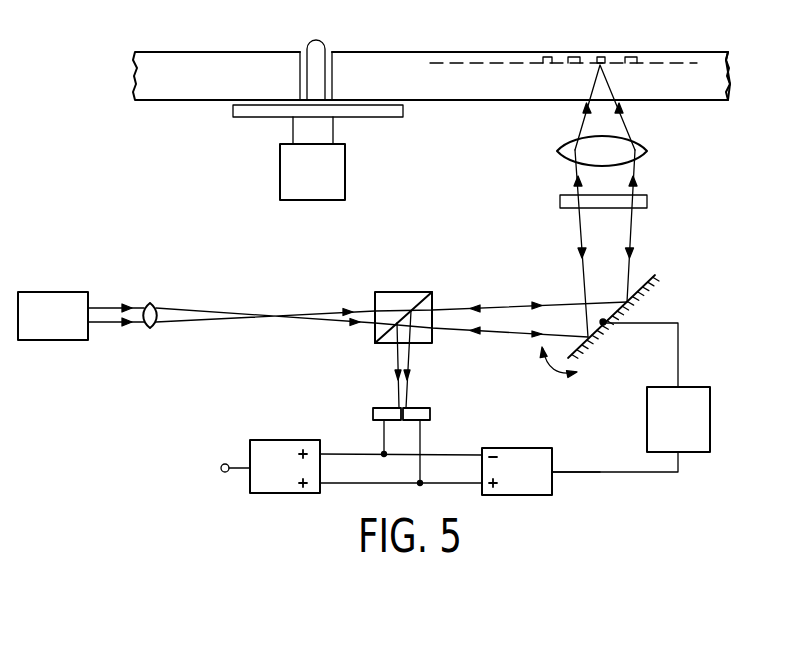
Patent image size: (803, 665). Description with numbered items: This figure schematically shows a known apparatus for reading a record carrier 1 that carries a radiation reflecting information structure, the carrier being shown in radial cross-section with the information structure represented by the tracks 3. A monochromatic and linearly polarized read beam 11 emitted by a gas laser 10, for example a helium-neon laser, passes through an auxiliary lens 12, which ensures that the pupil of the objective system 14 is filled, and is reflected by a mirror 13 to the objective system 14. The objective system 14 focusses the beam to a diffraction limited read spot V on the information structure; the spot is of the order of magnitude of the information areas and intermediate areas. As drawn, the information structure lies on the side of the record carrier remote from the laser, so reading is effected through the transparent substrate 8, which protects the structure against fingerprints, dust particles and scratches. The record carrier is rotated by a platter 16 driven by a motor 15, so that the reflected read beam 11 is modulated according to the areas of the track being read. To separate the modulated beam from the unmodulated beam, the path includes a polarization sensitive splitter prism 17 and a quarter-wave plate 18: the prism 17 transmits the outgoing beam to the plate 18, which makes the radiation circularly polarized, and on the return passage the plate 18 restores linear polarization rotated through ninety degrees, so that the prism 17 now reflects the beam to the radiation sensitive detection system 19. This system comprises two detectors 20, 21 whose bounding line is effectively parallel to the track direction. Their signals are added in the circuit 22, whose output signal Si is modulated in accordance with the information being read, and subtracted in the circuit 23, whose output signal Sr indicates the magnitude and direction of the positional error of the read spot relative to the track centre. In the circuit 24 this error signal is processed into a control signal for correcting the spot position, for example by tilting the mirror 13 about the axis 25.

The record carrier 1 is at (424, 48).
The tracks 3 is at (633, 53).
The transparent substrate 8 is at (710, 90).
The gas laser 10 is at (67, 302).
The read beam 11 is at (110, 322).
The auxiliary lens 12 is at (154, 301).
The mirror 13 is at (585, 352).
The objective system 14 is at (642, 150).
The motor 15 is at (337, 177).
The platter 16 is at (403, 111).
The polarization sensitive splitter prism 17 is at (404, 292).
The quarter-wave plate 18 is at (640, 202).
The radiation sensitive detection system 19 is at (441, 391).
The detector 20 is at (382, 407).
The detector 21 is at (431, 414).
The adding circuit 22 is at (280, 440).
The subtracting circuit 23 is at (512, 448).
The processing circuit 24 is at (647, 433).
The axis 25 is at (606, 320).
The read spot V is at (600, 66).
The information output signal Si is at (223, 464).
The positional error signal Sr is at (575, 472).